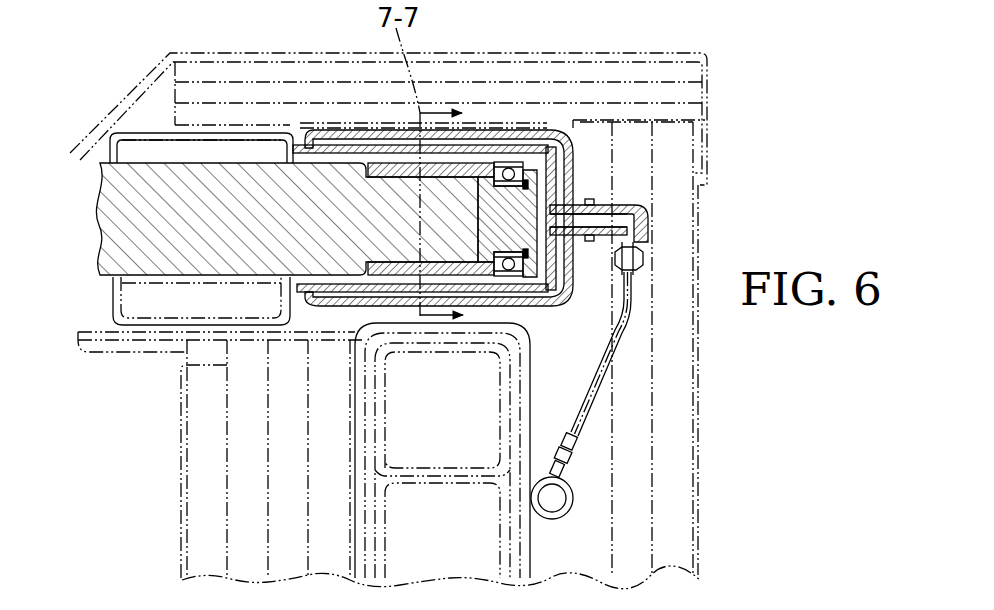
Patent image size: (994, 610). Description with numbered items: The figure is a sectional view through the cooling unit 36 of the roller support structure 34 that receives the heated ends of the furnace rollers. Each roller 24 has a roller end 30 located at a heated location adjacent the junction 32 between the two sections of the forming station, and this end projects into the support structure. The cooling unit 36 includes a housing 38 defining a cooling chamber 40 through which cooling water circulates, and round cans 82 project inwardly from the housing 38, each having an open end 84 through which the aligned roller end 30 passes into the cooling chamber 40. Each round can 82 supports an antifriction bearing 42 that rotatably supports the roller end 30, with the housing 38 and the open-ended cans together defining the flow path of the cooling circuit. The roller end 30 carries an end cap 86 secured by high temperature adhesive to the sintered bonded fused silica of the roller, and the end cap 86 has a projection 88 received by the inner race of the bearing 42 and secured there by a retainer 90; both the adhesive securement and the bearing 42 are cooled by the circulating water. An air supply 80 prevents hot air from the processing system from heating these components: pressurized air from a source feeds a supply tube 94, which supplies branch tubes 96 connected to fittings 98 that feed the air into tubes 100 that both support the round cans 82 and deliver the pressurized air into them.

The roller 24 is at (143, 160).
The roller end 30 is at (381, 228).
The junction 32 is at (578, 99).
The roller support structure 34 is at (588, 142).
The cooling unit 36 is at (507, 127).
The housing 38 is at (527, 130).
The cooling chamber 40 is at (356, 146).
The bearing 42 is at (515, 172).
The air supply 80 is at (618, 362).
The round can 82 is at (372, 152).
The open end 84 is at (298, 160).
The end cap 86 is at (392, 268).
The projection 88 is at (527, 232).
The retainer 90 is at (530, 186).
The supply tube 94 is at (567, 522).
The branch tube 96 is at (628, 332).
The fitting 98 is at (648, 214).
The tube 100 is at (572, 208).